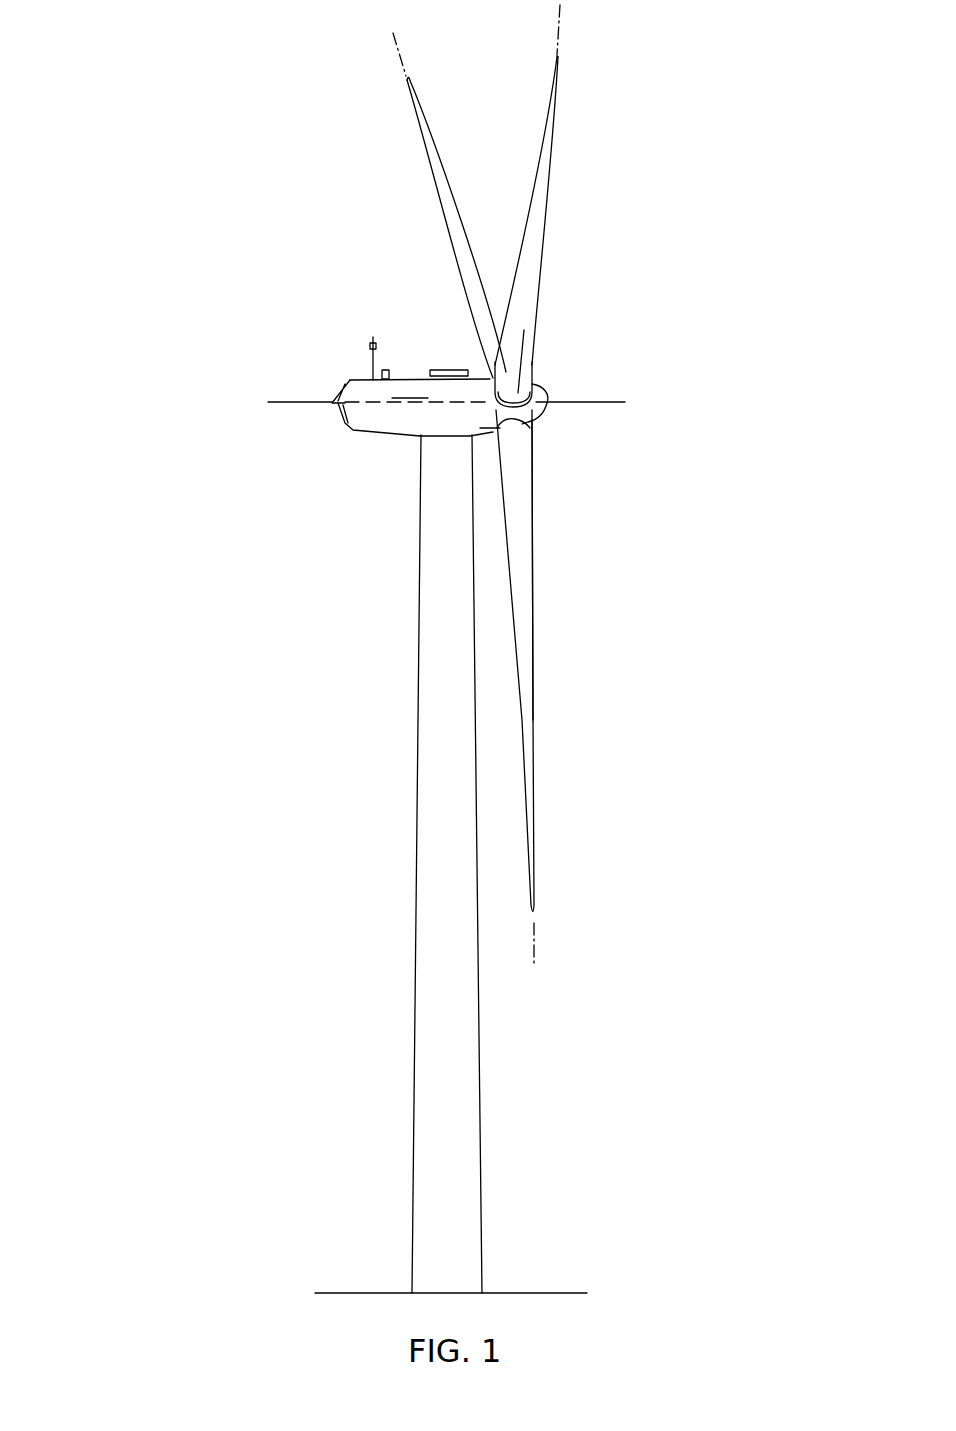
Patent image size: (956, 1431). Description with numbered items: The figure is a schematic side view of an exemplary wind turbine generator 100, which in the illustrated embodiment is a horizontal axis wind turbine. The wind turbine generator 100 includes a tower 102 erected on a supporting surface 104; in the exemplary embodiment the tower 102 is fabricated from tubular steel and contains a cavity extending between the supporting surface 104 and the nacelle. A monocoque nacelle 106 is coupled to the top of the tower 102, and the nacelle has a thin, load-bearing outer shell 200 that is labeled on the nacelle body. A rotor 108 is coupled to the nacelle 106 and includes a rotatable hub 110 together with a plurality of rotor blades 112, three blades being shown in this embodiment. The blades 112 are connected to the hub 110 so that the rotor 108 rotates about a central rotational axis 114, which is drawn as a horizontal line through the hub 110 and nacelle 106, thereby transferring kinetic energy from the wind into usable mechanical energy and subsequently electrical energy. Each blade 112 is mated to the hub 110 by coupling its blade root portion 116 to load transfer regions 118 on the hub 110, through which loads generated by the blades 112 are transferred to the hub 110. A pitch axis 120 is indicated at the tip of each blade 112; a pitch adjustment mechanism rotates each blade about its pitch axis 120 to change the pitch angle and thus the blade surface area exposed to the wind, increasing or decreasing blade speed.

The wind turbine generator 100 is at (190, 212).
The tower 102 is at (415, 1027).
The supporting surface 104 is at (370, 1293).
The monocoque nacelle 106 is at (350, 442).
The rotor 108 is at (568, 271).
The rotatable hub 110 is at (542, 395).
The rotor blades 112 is at (442, 162).
The central rotational axis 114 is at (625, 402).
The blade root portion 116 is at (530, 543).
The load transfer regions 118 is at (528, 428).
The pitch axis 120 is at (393, 34).
The outer shell 200 is at (411, 388).